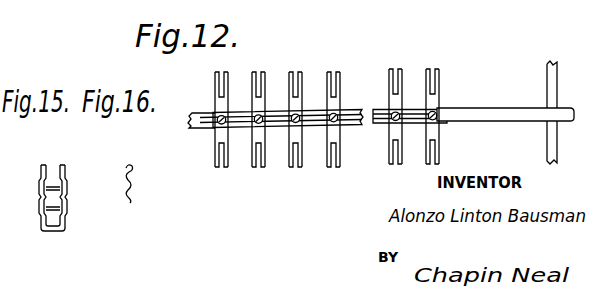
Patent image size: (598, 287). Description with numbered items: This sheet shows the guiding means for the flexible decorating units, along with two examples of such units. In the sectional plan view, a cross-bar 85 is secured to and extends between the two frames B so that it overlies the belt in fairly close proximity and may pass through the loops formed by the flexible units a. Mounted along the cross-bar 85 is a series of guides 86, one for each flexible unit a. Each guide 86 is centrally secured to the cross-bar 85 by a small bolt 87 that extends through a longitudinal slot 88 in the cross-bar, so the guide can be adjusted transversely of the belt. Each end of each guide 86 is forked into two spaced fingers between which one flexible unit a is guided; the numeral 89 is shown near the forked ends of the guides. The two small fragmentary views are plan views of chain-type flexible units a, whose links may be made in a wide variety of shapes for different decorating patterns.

In FIG. 12, the cross-bar 85 is at (482, 118).
In FIG. 12, the guide 86 is at (432, 100).
In FIG. 12, the bolt 87 is at (215, 117).
In FIG. 12, the longitudinal slot 88 is at (214, 124).
In FIG. 12, the clip 89 is at (316, 52).
In FIG. 12, the frame B is at (547, 148).
In FIG. 15, the flexible unit a is at (67, 195).
In FIG. 16, the flexible unit a is at (134, 196).